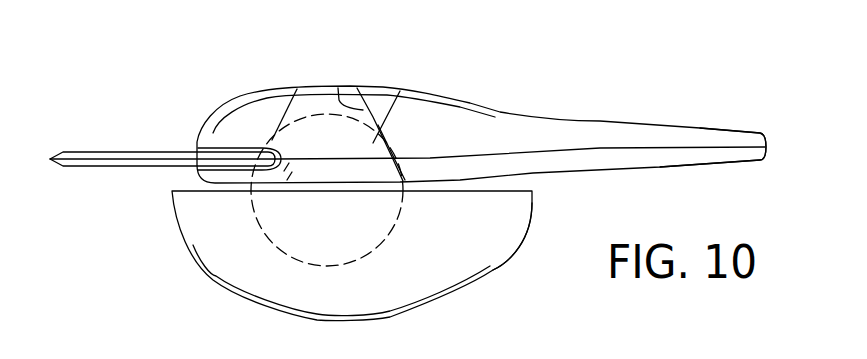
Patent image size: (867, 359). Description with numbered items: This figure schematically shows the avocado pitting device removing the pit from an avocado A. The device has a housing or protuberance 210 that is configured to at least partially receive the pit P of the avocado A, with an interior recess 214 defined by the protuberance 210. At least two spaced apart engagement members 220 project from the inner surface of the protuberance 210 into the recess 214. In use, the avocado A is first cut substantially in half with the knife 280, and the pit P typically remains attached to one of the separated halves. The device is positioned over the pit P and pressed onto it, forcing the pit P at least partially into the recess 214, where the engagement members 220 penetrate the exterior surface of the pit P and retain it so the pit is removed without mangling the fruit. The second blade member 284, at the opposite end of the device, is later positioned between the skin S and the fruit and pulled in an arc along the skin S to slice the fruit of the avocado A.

The protuberance 210 is at (470, 117).
The recess 214 is at (339, 84).
The engagement members 220 is at (403, 88).
The knife 280 is at (115, 151).
The second blade member 284 is at (708, 124).
The pit P is at (388, 232).
The skin S is at (200, 243).
The avocado A is at (497, 260).